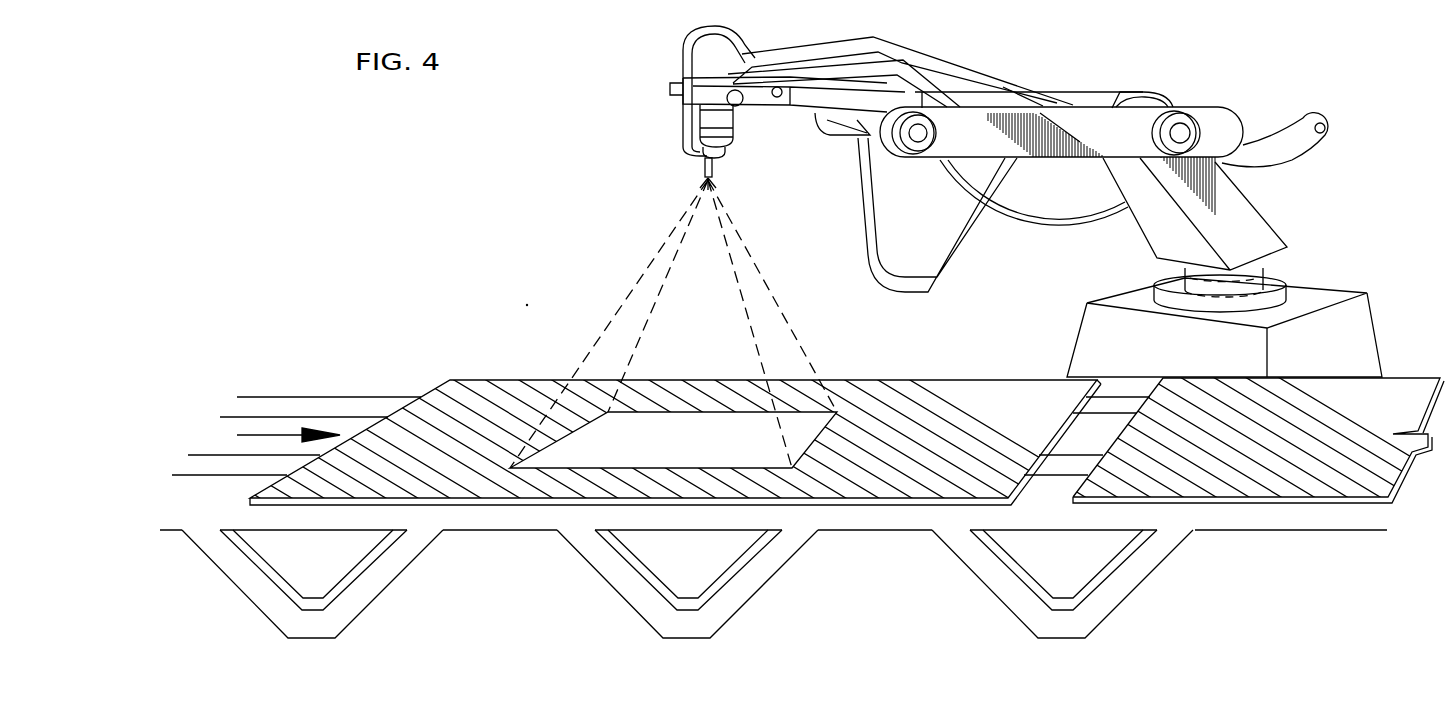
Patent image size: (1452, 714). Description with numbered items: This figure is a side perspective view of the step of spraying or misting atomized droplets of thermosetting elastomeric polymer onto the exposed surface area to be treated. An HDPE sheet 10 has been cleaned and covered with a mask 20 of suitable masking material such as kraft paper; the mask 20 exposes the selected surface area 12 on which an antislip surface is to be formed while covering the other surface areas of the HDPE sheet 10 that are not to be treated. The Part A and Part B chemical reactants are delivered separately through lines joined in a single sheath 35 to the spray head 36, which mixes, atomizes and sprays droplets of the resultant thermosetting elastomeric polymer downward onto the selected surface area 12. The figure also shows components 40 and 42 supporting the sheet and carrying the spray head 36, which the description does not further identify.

The HDPE sheet 10 is at (817, 507).
The selected surface area portion 12 is at (690, 449).
The mask 20 is at (898, 405).
The sheath 35 is at (1290, 168).
The spray head 36 is at (712, 118).
The conveyor 40 is at (468, 532).
The robot arm 42 is at (1118, 92).